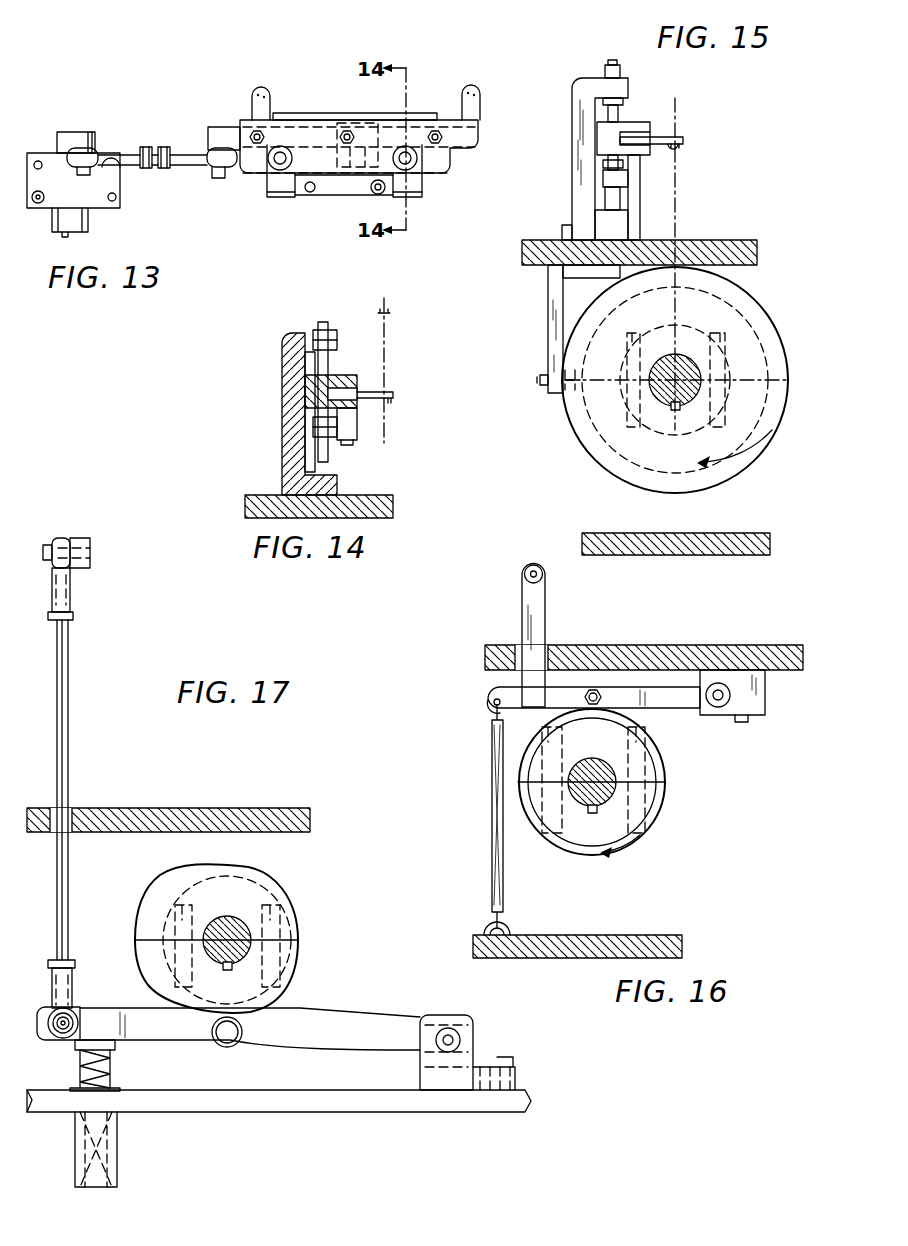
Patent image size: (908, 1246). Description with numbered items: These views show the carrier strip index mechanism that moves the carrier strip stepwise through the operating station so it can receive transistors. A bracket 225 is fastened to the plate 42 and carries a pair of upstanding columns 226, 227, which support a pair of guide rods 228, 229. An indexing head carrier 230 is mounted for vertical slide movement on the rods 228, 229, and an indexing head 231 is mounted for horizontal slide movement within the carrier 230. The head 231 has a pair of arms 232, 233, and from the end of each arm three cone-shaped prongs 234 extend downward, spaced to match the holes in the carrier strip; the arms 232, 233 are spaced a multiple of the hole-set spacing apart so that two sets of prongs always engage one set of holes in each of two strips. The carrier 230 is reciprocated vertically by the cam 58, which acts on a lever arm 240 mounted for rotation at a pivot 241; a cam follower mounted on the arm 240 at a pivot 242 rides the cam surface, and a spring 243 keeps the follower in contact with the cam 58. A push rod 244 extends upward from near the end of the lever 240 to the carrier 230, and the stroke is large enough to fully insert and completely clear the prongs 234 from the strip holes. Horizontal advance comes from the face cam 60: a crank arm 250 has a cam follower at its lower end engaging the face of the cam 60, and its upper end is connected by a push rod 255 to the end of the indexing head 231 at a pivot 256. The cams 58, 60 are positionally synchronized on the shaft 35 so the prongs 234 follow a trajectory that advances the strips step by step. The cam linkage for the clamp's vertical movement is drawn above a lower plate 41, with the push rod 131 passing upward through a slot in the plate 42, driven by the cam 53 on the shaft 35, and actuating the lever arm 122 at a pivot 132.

In FIG. 17, the shaft 35 is at (223, 917).
In FIG. 15, the base plate 41 is at (727, 533).
In FIG. 16, the base plate 41 is at (638, 801).
In FIG. 17, the base plate 41 is at (307, 1113).
In FIG. 17, the plate 42 is at (220, 808).
In FIG. 17, the cam 53 is at (268, 875).
In FIG. 16, the cam 58 is at (610, 837).
In FIG. 15, the face cam 60 is at (750, 460).
In FIG. 17, the lever arm 122 is at (80, 538).
In FIG. 17, the push rod 131 is at (68, 702).
In FIG. 17, the pivot 132 is at (92, 555).
In FIG. 13, the bracket 225 is at (340, 195).
In FIG. 13, the column 226 is at (422, 197).
In FIG. 14, the column 226 is at (282, 448).
In FIG. 15, the column 226 is at (572, 85).
In FIG. 13, the column 227 is at (285, 197).
In FIG. 13, the guide rod 228 is at (412, 157).
In FIG. 14, the guide rod 228 is at (325, 320).
In FIG. 15, the guide rod 228 is at (613, 63).
In FIG. 13, the guide rod 229 is at (275, 162).
In FIG. 13, the indexing head carrier 230 is at (308, 125).
In FIG. 15, the indexing head carrier 230 is at (650, 122).
In FIG. 13, the indexing head 231 is at (208, 134).
In FIG. 15, the indexing head 231 is at (685, 140).
In FIG. 13, the arm 232 is at (480, 105).
In FIG. 13, the arm 233 is at (252, 103).
In FIG. 15, the cone-shaped prongs 234 is at (676, 150).
In FIG. 16, the lever arm 240 is at (682, 705).
In FIG. 16, the pivot 241 is at (728, 698).
In FIG. 16, the pivot 242 is at (603, 702).
In FIG. 16, the spring 243 is at (503, 892).
In FIG. 16, the push rod 244 is at (547, 602).
In FIG. 13, the crank arm 250 is at (82, 132).
In FIG. 15, the crank arm 250 is at (548, 298).
In FIG. 13, the push rod 255 is at (148, 167).
In FIG. 13, the pivot 256 is at (216, 172).